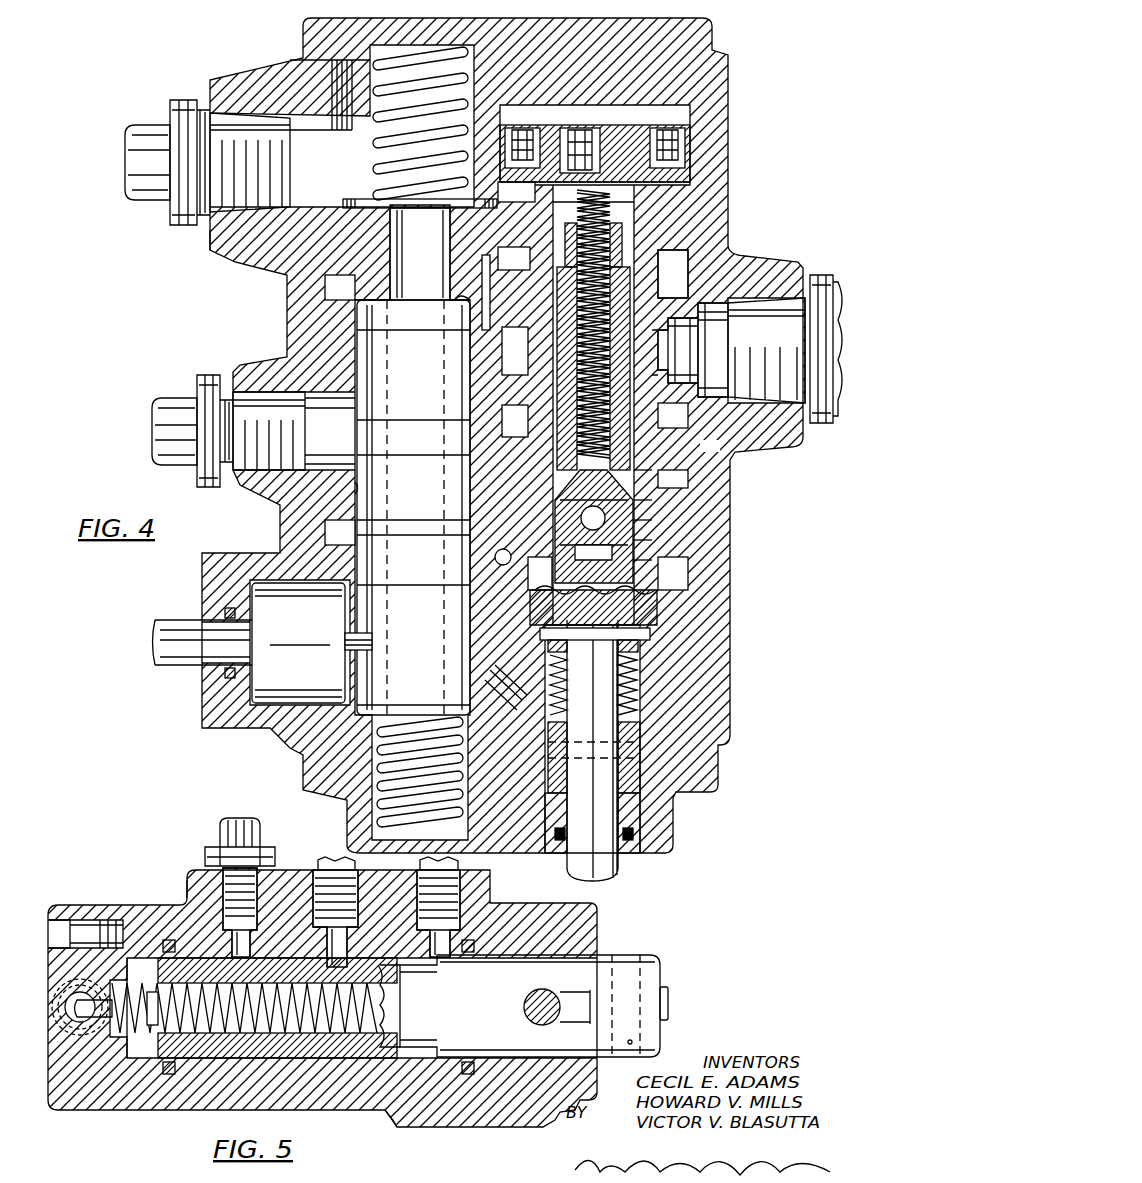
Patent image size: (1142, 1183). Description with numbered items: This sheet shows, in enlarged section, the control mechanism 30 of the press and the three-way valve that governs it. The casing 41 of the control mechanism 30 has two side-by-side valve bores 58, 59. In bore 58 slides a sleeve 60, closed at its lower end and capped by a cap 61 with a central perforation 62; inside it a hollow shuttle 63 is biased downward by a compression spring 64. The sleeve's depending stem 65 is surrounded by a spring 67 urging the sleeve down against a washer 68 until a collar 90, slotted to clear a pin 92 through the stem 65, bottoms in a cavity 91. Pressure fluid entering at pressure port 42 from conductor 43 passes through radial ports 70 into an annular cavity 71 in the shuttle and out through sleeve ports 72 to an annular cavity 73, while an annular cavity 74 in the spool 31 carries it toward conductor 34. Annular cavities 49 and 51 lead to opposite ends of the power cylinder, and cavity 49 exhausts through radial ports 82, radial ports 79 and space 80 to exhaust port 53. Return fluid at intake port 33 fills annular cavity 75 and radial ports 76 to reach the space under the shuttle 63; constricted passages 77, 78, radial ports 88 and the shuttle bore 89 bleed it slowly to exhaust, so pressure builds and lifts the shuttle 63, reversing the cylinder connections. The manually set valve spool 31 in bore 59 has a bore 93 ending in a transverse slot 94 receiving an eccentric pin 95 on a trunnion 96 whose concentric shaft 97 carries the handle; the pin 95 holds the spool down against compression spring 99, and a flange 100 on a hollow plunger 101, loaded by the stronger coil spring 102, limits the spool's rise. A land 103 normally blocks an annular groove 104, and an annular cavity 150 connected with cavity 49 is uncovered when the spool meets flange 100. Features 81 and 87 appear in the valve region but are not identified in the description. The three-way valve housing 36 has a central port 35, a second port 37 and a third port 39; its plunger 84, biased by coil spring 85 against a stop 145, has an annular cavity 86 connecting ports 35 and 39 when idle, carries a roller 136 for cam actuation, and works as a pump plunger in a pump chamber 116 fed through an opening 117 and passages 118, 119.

In FIG. 4, the control mechanism 30 is at (745, 113).
In FIG. 4, the valve spool 31 is at (420, 486).
In FIG. 4, the intake port 33 is at (495, 557).
In FIG. 4, the conductor 34 is at (162, 424).
In FIG. 5, the central port 35 is at (300, 876).
In FIG. 5, the housing 36 is at (533, 908).
In FIG. 5, the second port 37 is at (190, 882).
In FIG. 5, the third port 39 is at (462, 917).
In FIG. 4, the casing 41 is at (216, 243).
In FIG. 4, the pressure port 42 is at (665, 356).
In FIG. 4, the conductor 43 is at (830, 300).
In FIG. 4, the annular cavity 49 is at (457, 300).
In FIG. 4, the annular cavity 51 is at (650, 500).
In FIG. 4, the exhaust port 53 is at (292, 88).
In FIG. 4, the valve bore 58 is at (655, 640).
In FIG. 4, the valve bore 59 is at (357, 490).
In FIG. 4, the slidable sleeve 60 is at (660, 613).
In FIG. 4, the cap 61 is at (628, 137).
In FIG. 4, the central perforation 62 is at (606, 125).
In FIG. 4, the hollow shuttle 63 is at (625, 206).
In FIG. 4, the compression spring 64 is at (585, 190).
In FIG. 4, the stem 65 is at (618, 879).
In FIG. 4, the spring 67 is at (635, 678).
In FIG. 4, the washer 68 is at (637, 648).
In FIG. 4, the radial ports 70 is at (672, 300).
In FIG. 4, the annular cavity 71 is at (655, 382).
In FIG. 4, the radial ports 72 is at (688, 478).
In FIG. 4, the annular cavity 73 is at (705, 445).
In FIG. 4, the annular cavity 74 is at (366, 444).
In FIG. 4, the annular cavity 75 is at (742, 583).
In FIG. 4, the radial ports 76 is at (650, 560).
In FIG. 4, the constricted passage 77 is at (599, 542).
In FIG. 4, the constricted passage 78 is at (594, 526).
In FIG. 4, the radial ports 79 is at (510, 196).
In FIG. 4, the space 80 is at (486, 128).
In FIG. 4, the passage 81 is at (655, 480).
In FIG. 4, the radial ports 82 is at (548, 256).
In FIG. 5, the plunger 84 is at (567, 978).
In FIG. 5, the coil spring 85 is at (135, 994).
In FIG. 5, the annular cavity 86 is at (386, 1118).
In FIG. 4, the passage 87 is at (640, 520).
In FIG. 4, the radial ports 88 is at (645, 540).
In FIG. 4, the bore 89 is at (688, 425).
In FIG. 4, the collar 90 is at (637, 730).
In FIG. 4, the cavity 91 is at (640, 800).
In FIG. 4, the pin 92 is at (640, 750).
In FIG. 4, the bore 93 is at (388, 392).
In FIG. 4, the transverse slot 94 is at (420, 678).
In FIG. 4, the pin 95 is at (348, 646).
In FIG. 4, the trunnion 96 is at (298, 613).
In FIG. 4, the shaft 97 is at (186, 673).
In FIG. 4, the compression spring 99 is at (352, 816).
In FIG. 4, the flange 100 is at (372, 199).
In FIG. 4, the hollow plunger 101 is at (402, 233).
In FIG. 4, the coil spring 102 is at (376, 150).
In FIG. 4, the land 103 is at (393, 592).
In FIG. 4, the annular groove 104 is at (355, 532).
In FIG. 5, the pump chamber 116 is at (140, 1058).
In FIG. 5, the opening 117 is at (157, 1040).
In FIG. 5, the passage 118 is at (98, 1020).
In FIG. 5, the passage 119 is at (80, 1022).
In FIG. 5, the roller 136 is at (670, 1007).
In FIG. 5, the stop 145 is at (525, 1009).
In FIG. 4, the annular cavity 150 is at (326, 290).